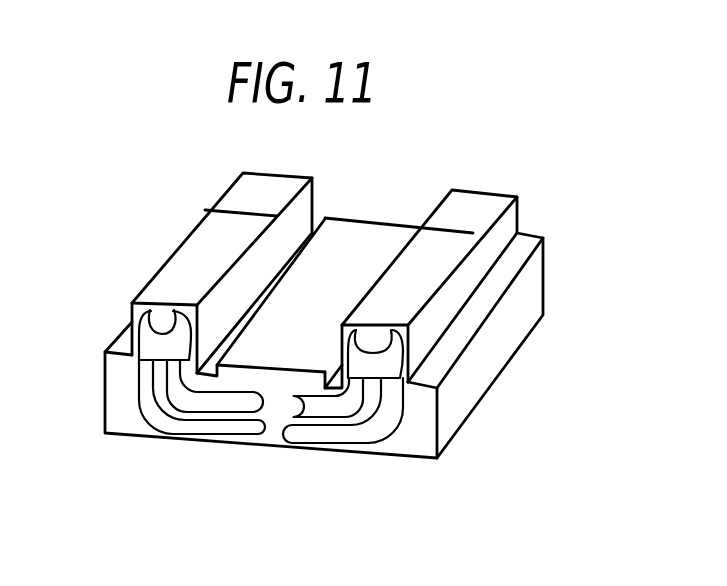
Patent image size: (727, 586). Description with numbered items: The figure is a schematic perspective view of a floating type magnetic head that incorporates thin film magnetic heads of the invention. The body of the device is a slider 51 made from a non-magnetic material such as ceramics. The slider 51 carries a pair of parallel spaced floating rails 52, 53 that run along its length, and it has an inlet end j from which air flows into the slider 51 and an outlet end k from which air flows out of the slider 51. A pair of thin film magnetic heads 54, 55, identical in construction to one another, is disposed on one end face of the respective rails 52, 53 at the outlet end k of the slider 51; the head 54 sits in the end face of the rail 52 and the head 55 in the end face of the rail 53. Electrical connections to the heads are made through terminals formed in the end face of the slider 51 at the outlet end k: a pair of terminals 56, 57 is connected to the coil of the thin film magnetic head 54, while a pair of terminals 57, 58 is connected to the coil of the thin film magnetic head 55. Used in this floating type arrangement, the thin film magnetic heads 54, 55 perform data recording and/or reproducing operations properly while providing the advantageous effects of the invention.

The slider 51 is at (373, 214).
The floating rail 52 is at (443, 248).
The floating rail 53 is at (192, 247).
The thin film magnetic head 54 is at (388, 358).
The thin film magnetic head 55 is at (147, 341).
The terminal 56 is at (363, 433).
The terminal 57 is at (232, 427).
The terminal 58 is at (197, 396).
The inlet end j is at (315, 197).
The outlet end k is at (132, 418).